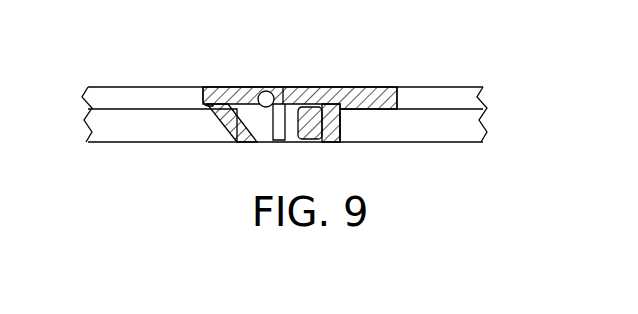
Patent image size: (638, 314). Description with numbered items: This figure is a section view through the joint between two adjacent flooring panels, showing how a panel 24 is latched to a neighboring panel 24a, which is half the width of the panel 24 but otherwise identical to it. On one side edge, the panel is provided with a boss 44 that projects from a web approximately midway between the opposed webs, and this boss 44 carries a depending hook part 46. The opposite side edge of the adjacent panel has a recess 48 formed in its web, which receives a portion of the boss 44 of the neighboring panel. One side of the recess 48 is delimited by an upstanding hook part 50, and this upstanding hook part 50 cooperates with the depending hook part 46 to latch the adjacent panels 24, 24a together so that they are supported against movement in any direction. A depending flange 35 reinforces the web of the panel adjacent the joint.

The panel 24 is at (138, 78).
The half-width panel 24a is at (359, 75).
The boss 44 is at (283, 87).
The depending hook part 46 is at (272, 120).
The recess 48 is at (267, 87).
The upstanding hook part 50 is at (293, 87).
The depending flange 35 is at (345, 125).